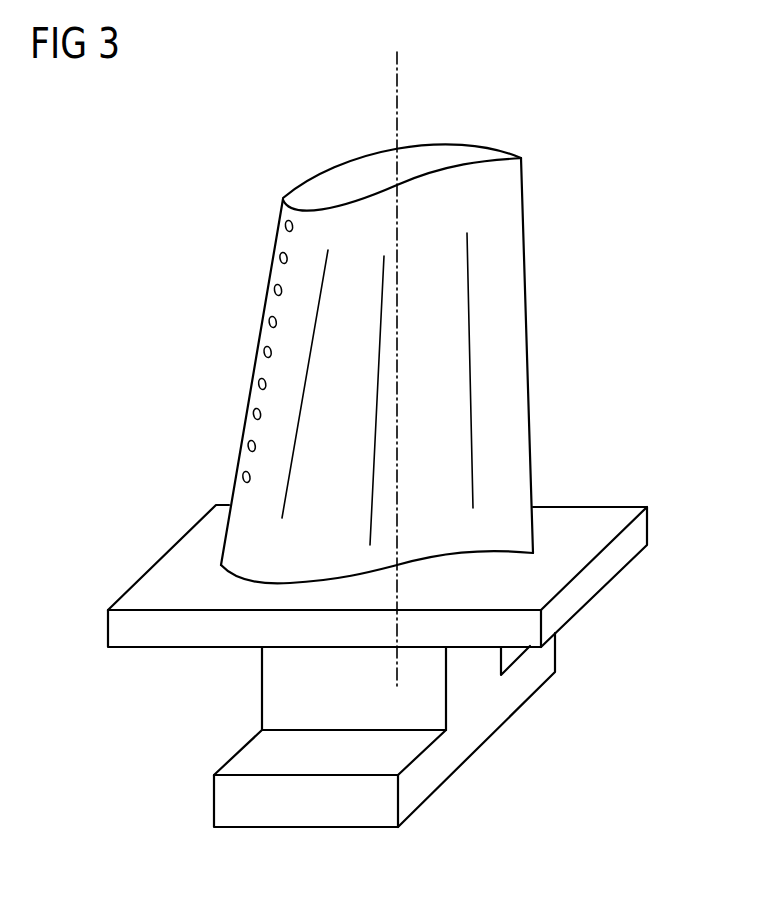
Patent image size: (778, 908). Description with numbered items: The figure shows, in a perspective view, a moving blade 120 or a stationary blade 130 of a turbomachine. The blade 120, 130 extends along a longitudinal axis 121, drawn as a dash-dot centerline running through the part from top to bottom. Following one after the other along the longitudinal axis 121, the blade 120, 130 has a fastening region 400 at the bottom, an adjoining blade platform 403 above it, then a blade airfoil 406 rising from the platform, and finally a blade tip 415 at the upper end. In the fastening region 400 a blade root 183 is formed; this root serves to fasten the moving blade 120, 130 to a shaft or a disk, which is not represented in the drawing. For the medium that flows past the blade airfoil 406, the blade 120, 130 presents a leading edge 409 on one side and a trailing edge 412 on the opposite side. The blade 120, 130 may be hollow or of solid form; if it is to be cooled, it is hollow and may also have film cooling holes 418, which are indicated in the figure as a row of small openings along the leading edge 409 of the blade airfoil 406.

The longitudinal axis 121 is at (398, 73).
The moving blade 120 is at (325, 346).
The stationary blade 130 is at (167, 475).
The leading edge 409 is at (252, 300).
The trailing edge 412 is at (540, 330).
The blade tip 415 is at (335, 180).
The blade airfoil 406 is at (277, 402).
The film cooling holes 418 is at (284, 228).
The blade platform 403 is at (604, 570).
The fastening region 400 is at (375, 730).
The blade root 183 is at (248, 753).